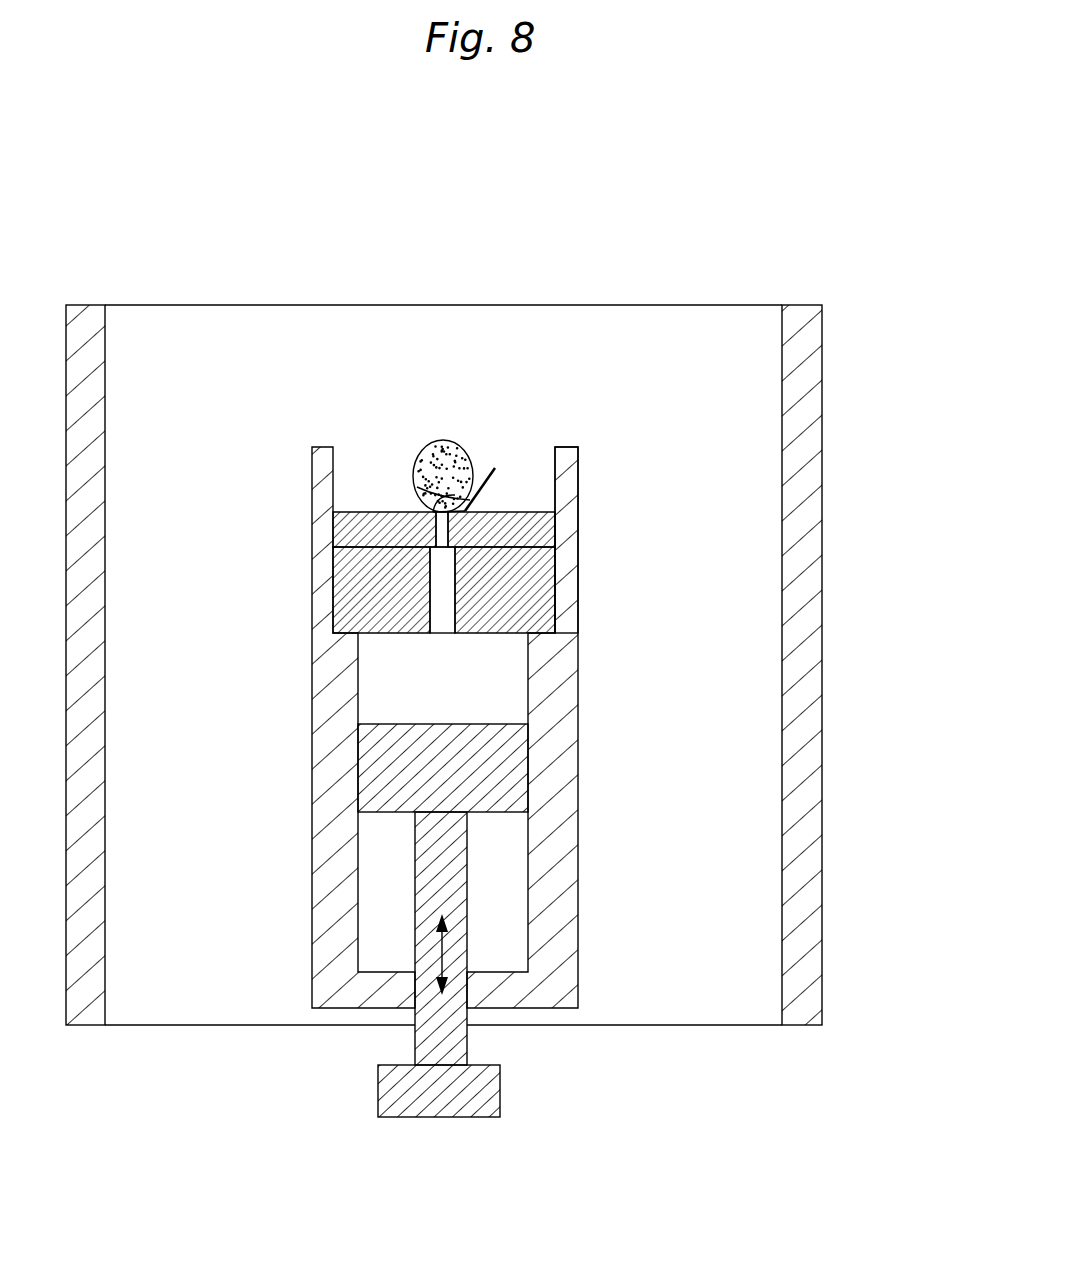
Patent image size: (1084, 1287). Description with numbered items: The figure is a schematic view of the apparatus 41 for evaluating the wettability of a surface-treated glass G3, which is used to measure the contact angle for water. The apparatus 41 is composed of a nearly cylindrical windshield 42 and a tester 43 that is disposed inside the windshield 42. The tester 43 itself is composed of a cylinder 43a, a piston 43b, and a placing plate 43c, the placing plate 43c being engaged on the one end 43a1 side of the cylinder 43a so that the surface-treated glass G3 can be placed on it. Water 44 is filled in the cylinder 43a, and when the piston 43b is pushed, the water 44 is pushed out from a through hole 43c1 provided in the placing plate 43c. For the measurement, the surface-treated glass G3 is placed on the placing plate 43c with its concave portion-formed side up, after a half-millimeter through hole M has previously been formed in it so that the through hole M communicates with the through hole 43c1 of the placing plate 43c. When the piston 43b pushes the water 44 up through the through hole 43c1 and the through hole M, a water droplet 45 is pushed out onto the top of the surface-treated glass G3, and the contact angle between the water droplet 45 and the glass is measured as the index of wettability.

The apparatus for evaluating wettability 41 is at (812, 262).
The windshield 42 is at (818, 378).
The tester 43 is at (620, 1008).
The cylinder 43a is at (578, 876).
The one end of the cylinder 43a1 is at (600, 489).
The piston 43b is at (500, 1093).
The placing plate 43c is at (535, 593).
The through hole 43c1 is at (437, 608).
The water 44 is at (487, 682).
The water droplet 45 is at (448, 442).
The surface-treated glass G3 is at (530, 512).
The through hole M is at (438, 519).